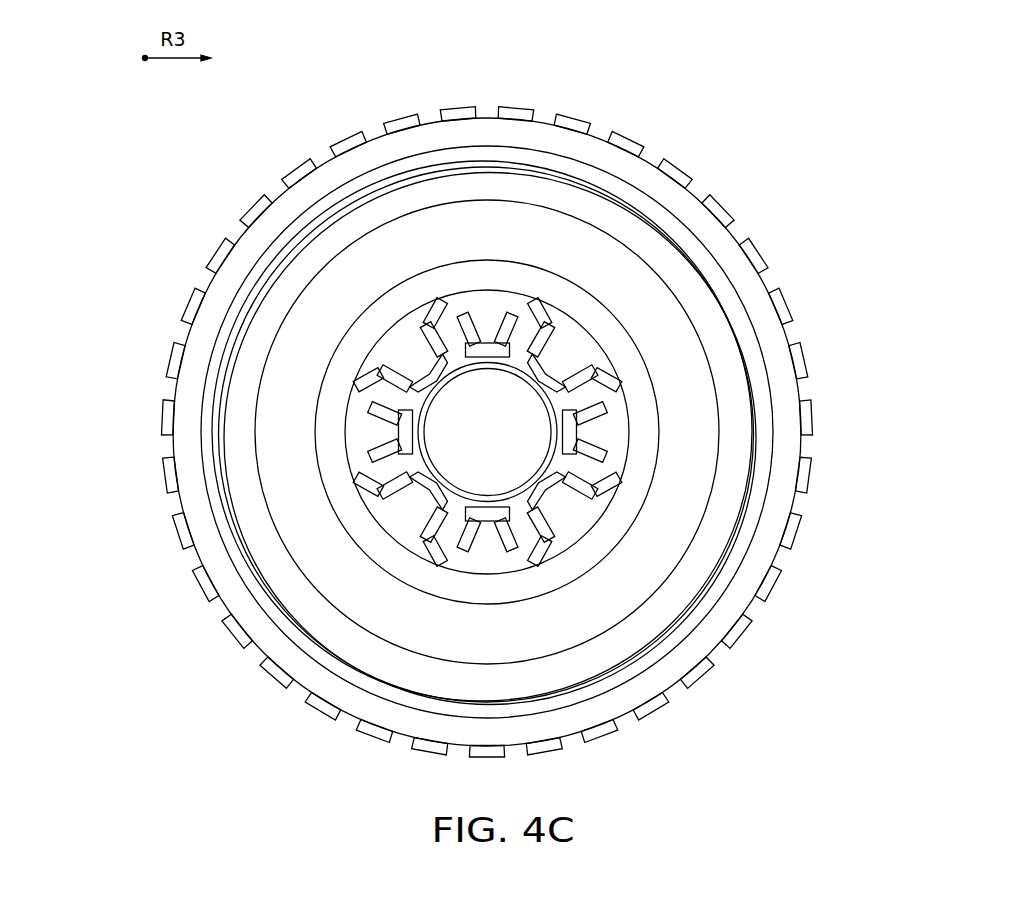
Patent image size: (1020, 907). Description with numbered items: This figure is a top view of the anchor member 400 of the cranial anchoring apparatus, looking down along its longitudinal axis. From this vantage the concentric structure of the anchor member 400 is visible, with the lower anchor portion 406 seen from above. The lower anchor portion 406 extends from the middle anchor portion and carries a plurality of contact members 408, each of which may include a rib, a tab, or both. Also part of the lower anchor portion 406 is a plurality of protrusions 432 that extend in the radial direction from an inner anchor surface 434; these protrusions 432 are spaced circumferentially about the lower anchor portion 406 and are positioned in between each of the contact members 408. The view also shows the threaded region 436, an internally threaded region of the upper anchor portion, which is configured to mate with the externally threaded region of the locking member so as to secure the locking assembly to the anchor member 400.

The anchor member 400 is at (824, 162).
The lower anchor portion 406 is at (322, 559).
The contact members 408 is at (399, 496).
The protrusions 432 is at (430, 303).
The inner anchor surface 434 is at (315, 508).
The threaded region 436 is at (310, 194).